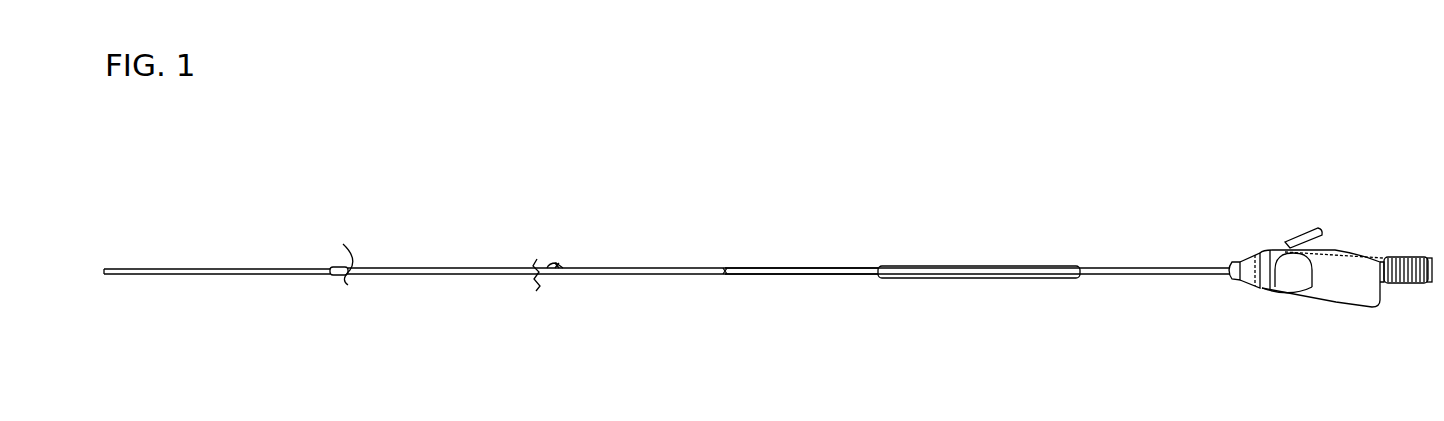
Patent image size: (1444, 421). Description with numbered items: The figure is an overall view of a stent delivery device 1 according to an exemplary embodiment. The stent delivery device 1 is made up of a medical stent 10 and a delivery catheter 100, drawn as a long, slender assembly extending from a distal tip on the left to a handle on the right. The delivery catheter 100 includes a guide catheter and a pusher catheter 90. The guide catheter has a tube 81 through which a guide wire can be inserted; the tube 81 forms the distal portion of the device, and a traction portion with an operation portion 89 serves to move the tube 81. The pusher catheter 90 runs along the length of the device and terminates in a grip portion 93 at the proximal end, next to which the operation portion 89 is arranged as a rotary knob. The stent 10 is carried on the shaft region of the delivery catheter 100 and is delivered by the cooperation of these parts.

The stent delivery device 1 is at (1178, 131).
The medical stent 10 is at (456, 256).
The tube 81 is at (235, 265).
The operation portion 89 is at (1397, 283).
The pusher catheter 90 is at (745, 284).
The grip portion 93 is at (1298, 276).
The delivery catheter 100 is at (875, 196).